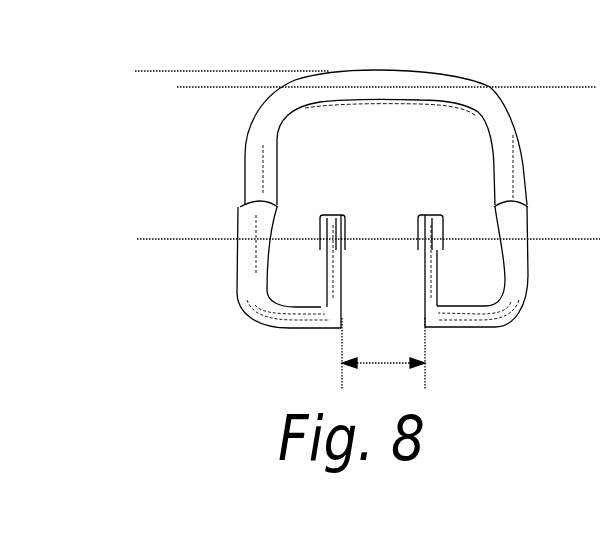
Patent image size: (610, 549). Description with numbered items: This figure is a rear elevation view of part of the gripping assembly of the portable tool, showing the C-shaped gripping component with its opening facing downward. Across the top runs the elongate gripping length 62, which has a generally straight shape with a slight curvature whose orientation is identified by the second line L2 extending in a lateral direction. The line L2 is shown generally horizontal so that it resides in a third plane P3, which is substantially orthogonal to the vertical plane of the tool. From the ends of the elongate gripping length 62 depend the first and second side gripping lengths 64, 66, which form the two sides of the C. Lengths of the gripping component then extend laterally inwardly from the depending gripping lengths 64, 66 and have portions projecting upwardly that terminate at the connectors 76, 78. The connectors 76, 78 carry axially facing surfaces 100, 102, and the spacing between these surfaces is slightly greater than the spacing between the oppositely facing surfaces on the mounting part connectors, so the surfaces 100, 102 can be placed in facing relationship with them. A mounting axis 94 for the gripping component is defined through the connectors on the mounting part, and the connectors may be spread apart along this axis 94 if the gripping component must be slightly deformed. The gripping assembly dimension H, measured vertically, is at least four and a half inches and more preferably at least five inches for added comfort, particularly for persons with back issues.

The elongate gripping length 62 is at (371, 70).
The second line L2 is at (414, 92).
The third plane P3 is at (218, 88).
The gripping assembly dimension H is at (144, 71).
The second side gripping length 66 is at (242, 182).
The first side gripping length 64 is at (528, 211).
The mounting axis 94 is at (580, 241).
The connector 78 is at (346, 241).
The axially facing surface 102 is at (344, 252).
The axially facing surface 100 is at (421, 250).
The connector 76 is at (419, 240).